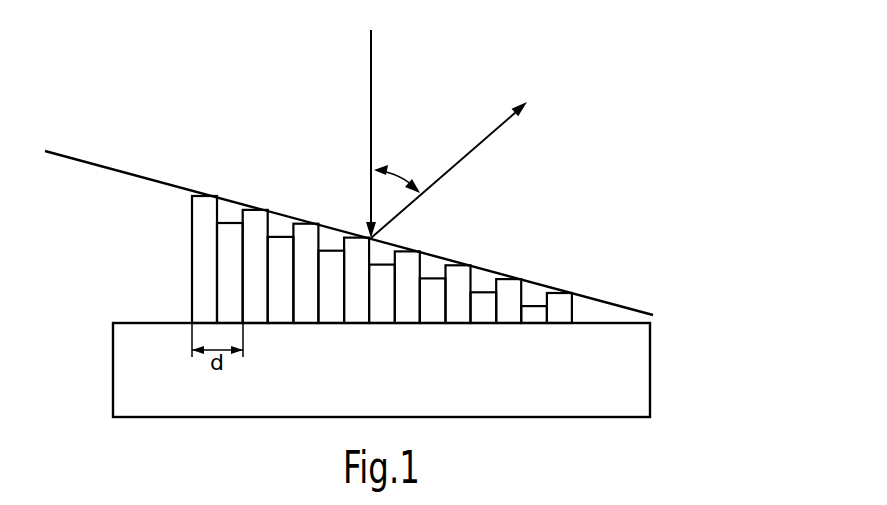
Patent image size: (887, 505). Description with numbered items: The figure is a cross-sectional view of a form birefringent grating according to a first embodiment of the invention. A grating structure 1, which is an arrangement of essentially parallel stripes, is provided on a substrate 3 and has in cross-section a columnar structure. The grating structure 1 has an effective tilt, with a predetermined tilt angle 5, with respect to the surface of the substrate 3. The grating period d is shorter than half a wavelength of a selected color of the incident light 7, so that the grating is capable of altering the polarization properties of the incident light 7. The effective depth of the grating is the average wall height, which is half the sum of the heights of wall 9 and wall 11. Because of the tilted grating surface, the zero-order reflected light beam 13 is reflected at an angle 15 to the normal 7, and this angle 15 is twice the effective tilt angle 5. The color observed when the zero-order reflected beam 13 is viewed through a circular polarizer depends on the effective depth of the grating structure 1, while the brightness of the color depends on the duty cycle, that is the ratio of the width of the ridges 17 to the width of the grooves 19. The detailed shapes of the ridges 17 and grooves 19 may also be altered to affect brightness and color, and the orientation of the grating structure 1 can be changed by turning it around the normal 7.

The grating structure 1 is at (640, 47).
The substrate 3 is at (640, 363).
The tilt angle 5 is at (607, 330).
The incident light 7 is at (369, 72).
The wall 9 is at (216, 214).
The wall 11 is at (244, 211).
The zero-order reflected light beam 13 is at (481, 142).
The angle 15 is at (397, 169).
The ridges 17 is at (293, 331).
The grooves 19 is at (319, 331).